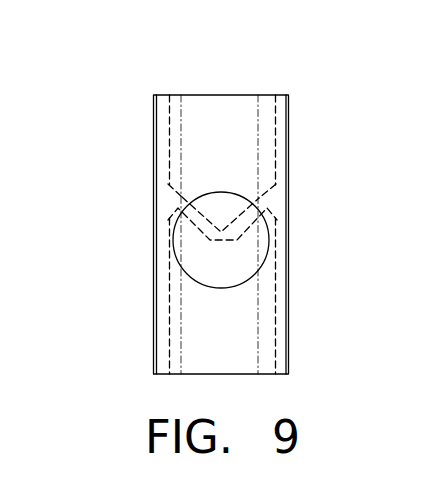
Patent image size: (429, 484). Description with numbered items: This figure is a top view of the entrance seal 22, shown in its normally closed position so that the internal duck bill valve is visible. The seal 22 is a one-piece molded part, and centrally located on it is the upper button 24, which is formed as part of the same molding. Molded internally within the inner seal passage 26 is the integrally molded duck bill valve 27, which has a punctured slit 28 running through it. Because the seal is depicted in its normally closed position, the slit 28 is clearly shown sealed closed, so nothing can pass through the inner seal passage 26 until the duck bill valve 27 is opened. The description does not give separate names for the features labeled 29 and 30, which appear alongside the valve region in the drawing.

The seal 22 is at (155, 308).
The upper button 24 is at (237, 273).
The inner seal passage 26 is at (229, 137).
The duck bill valve 27 is at (246, 225).
The punctured slit 28 is at (221, 232).
The right groove side 29 is at (258, 198).
The left groove side 30 is at (182, 197).